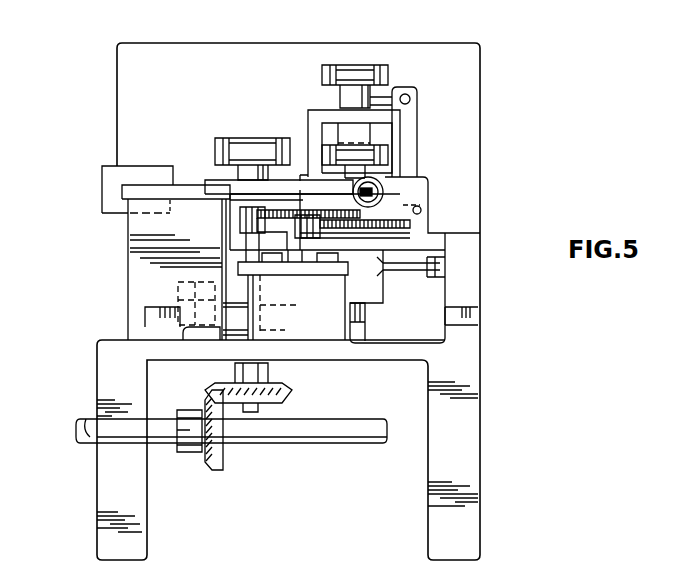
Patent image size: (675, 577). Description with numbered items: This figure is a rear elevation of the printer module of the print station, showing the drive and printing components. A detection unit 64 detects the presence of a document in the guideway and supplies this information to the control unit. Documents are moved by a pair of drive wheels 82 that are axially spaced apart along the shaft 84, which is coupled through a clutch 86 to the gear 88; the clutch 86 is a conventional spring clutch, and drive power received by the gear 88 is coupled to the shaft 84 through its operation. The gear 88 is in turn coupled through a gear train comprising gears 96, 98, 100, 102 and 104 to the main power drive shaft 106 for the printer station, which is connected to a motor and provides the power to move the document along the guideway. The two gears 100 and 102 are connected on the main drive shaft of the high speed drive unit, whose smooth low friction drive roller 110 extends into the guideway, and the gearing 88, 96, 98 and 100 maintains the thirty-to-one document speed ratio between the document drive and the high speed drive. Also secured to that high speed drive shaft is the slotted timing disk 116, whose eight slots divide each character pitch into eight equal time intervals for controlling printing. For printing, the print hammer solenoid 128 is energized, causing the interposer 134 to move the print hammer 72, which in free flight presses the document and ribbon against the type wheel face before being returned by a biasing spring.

The detection unit 64 is at (443, 283).
The print hammer 72 is at (380, 186).
The drive wheels 82 is at (370, 73).
The shaft 84 is at (360, 325).
The clutch 86 is at (380, 290).
The gear 88 is at (423, 207).
The gear 96 is at (300, 262).
The gear 98 is at (247, 190).
The gear 100 is at (242, 222).
The gear 102 is at (290, 394).
The gear 104 is at (226, 470).
The main power drive shaft 106 is at (340, 438).
The drive roller 110 is at (248, 147).
The slotted timing disk 116 is at (277, 307).
The print hammer solenoid 128 is at (102, 203).
The interposer 134 is at (290, 190).